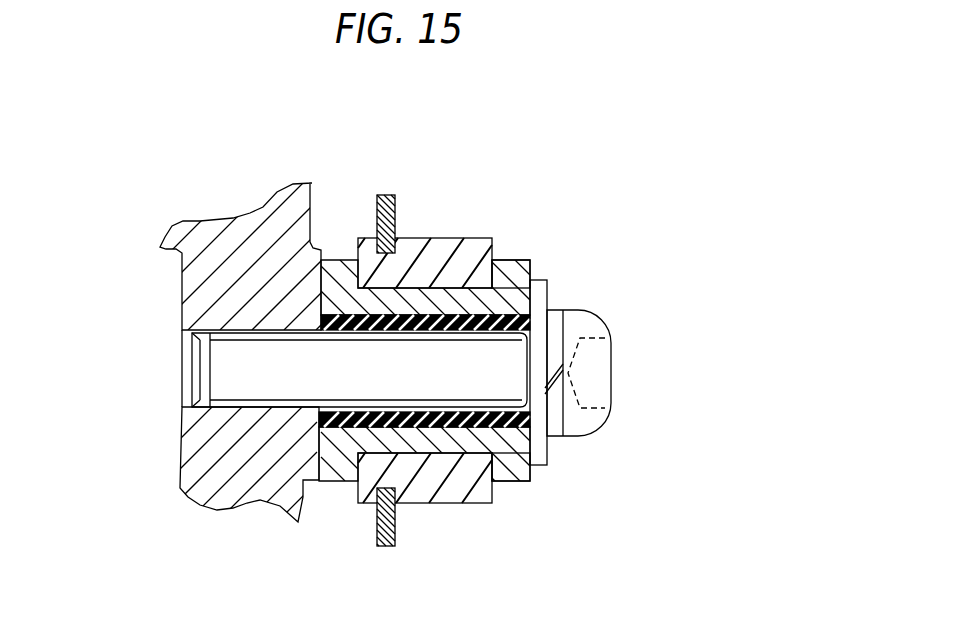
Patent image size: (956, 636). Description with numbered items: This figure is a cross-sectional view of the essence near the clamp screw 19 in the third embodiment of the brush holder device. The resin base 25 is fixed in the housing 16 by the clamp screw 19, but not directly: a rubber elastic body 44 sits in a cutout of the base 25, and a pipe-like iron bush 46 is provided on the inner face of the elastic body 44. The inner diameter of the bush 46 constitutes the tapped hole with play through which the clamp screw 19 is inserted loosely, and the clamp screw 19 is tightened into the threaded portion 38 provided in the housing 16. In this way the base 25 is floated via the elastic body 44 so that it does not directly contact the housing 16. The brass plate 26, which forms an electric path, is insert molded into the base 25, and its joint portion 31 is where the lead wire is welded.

The housing 16 is at (225, 292).
The threaded portion 38 is at (248, 408).
The elastic body 44 is at (523, 262).
The bush 46 is at (497, 475).
The base 25 is at (470, 238).
The plate 26 is at (378, 209).
The joint portion 31 is at (395, 213).
The clamp screw 19 is at (583, 423).